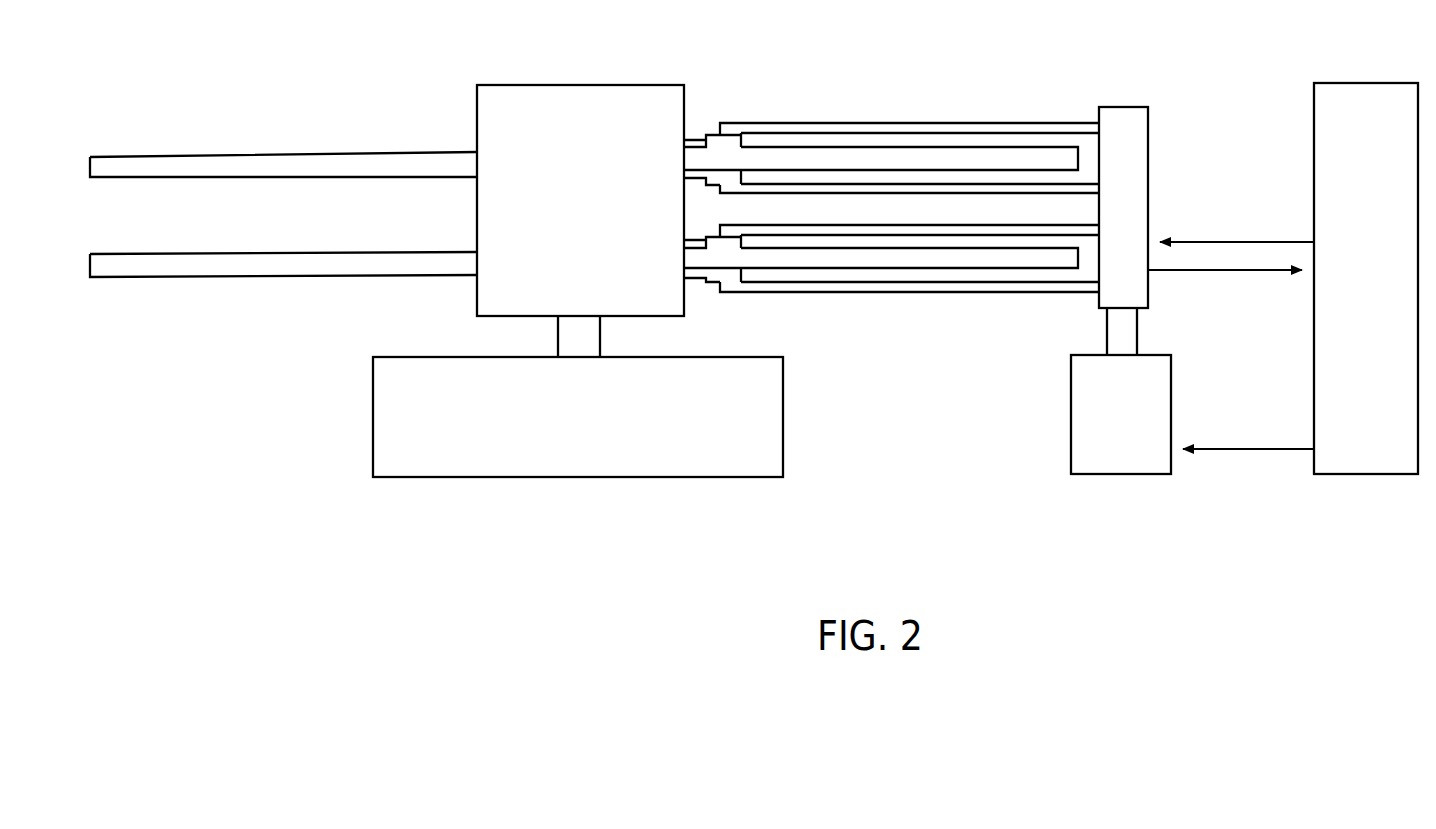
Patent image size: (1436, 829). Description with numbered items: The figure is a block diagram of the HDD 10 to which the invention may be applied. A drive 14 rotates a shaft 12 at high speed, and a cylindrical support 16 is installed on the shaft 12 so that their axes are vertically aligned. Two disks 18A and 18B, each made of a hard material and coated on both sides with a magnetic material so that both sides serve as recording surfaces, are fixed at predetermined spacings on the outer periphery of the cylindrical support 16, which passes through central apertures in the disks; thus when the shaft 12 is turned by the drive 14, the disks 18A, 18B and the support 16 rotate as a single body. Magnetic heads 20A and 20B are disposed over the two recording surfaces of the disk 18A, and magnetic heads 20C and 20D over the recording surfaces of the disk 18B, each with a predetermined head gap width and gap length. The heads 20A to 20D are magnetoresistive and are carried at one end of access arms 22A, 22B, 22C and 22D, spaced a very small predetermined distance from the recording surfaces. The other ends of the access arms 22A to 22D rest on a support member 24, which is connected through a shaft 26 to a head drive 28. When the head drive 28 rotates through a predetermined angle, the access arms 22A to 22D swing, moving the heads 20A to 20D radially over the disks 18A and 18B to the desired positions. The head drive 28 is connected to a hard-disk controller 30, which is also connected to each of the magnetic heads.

The HDD 10 is at (195, 98).
The shaft 12 is at (600, 340).
The drive 14 is at (783, 405).
The cylindrical support 16 is at (661, 84).
The disk 18A is at (92, 157).
The disk 18B is at (90, 271).
The magnetic head 20A is at (700, 140).
The magnetic head 20B is at (700, 180).
The magnetic head 20C is at (700, 241).
The magnetic head 20D is at (700, 275).
The access arm 22A is at (887, 123).
The access arm 22B is at (812, 193).
The access arm 22C is at (932, 225).
The access arm 22D is at (815, 293).
The support member 24 is at (1148, 128).
The shaft 26 is at (1137, 340).
The head drive 28 is at (1118, 474).
The hard-disk controller 30 is at (1360, 474).